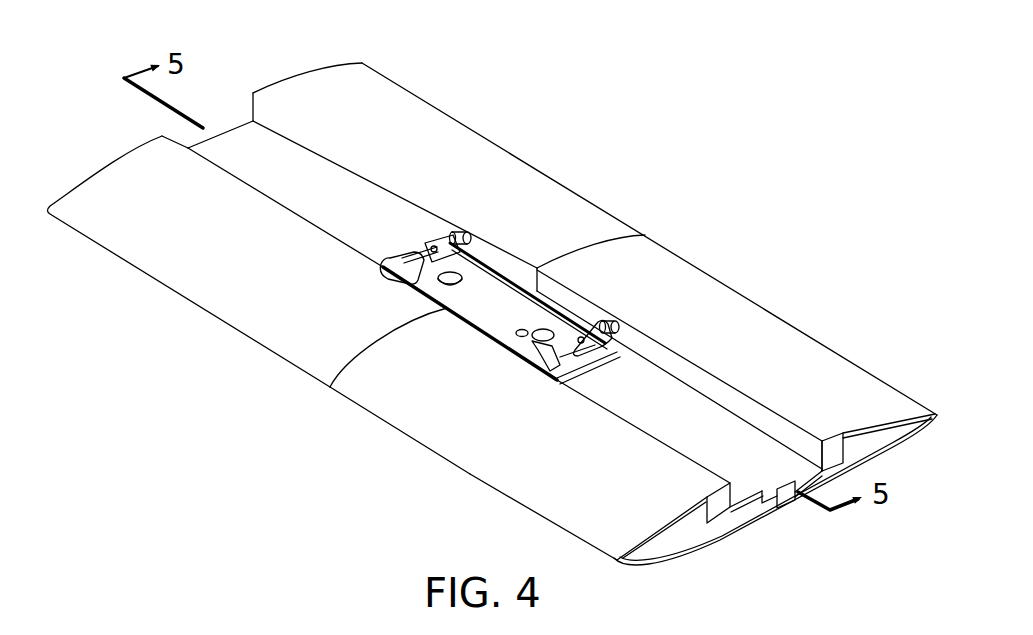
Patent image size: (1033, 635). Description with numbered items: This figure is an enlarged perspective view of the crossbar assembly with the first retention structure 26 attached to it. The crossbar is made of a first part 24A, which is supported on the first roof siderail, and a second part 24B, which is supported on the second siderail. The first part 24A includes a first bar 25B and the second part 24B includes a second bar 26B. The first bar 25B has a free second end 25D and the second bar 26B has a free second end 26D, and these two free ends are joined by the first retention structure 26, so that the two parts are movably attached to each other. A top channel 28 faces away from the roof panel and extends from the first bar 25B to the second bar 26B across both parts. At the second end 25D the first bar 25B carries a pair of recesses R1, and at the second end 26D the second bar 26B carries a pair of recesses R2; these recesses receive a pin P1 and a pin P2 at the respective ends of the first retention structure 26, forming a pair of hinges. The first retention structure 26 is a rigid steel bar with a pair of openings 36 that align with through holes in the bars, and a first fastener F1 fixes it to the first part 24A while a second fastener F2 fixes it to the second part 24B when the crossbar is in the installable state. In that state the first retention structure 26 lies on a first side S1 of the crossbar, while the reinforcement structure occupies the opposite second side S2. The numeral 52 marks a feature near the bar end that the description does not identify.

The first part 24A is at (567, 120).
The second part 24B is at (780, 240).
The first bar 25B is at (148, 281).
The second end of first bar 25D is at (250, 348).
The first retention structure 26 is at (514, 286).
The second bar 26B is at (500, 495).
The second end of second bar 26D is at (405, 443).
The top channel 28 is at (245, 152).
The pin P1 is at (455, 234).
The pin P2 is at (600, 325).
The pair of recesses R1 is at (473, 240).
The pair of recesses R2 is at (619, 328).
The first fastener F1 is at (447, 284).
The second fastener F2 is at (533, 339).
The first side S1 is at (869, 340).
The second side S2 is at (866, 526).
The opening 36 is at (796, 541).
The tab 52 is at (776, 511).